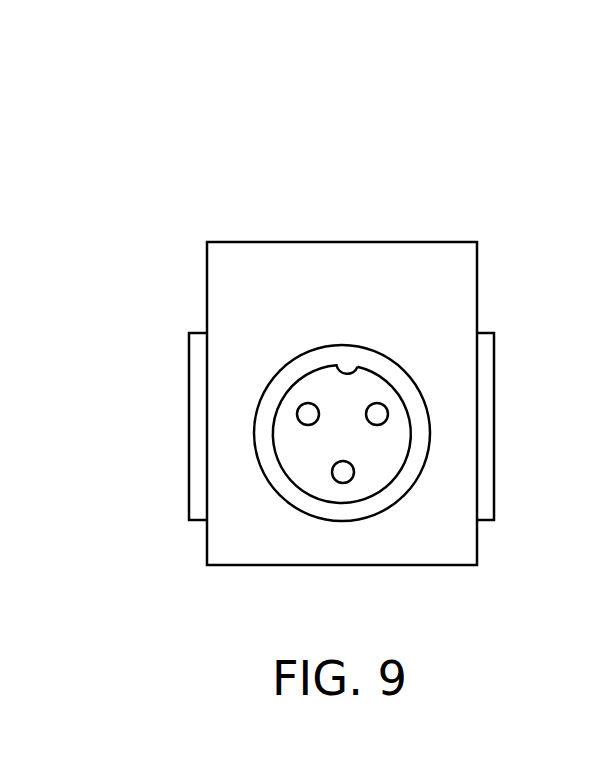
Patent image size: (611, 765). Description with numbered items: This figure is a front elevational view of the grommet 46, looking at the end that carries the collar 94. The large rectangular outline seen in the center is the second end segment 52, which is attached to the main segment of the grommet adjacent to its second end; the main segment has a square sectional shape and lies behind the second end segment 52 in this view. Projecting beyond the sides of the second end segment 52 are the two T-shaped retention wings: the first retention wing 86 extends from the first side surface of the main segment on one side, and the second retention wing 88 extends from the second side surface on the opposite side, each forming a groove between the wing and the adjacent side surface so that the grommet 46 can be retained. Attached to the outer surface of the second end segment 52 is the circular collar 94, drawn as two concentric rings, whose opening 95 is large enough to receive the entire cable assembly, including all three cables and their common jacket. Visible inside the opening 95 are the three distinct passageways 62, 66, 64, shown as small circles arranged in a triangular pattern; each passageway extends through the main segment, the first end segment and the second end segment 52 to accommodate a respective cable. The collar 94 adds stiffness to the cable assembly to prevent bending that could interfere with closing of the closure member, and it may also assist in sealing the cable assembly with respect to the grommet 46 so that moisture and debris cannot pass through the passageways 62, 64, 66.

The grommet 46 is at (340, 332).
The second end segment 52 is at (342, 357).
The second retention wing 88 is at (192, 438).
The first retention wing 86 is at (488, 445).
The collar 94 is at (302, 503).
The opening 95 is at (356, 381).
The passageway 62 is at (298, 413).
The passageway 66 is at (382, 413).
The passageway 64 is at (346, 473).